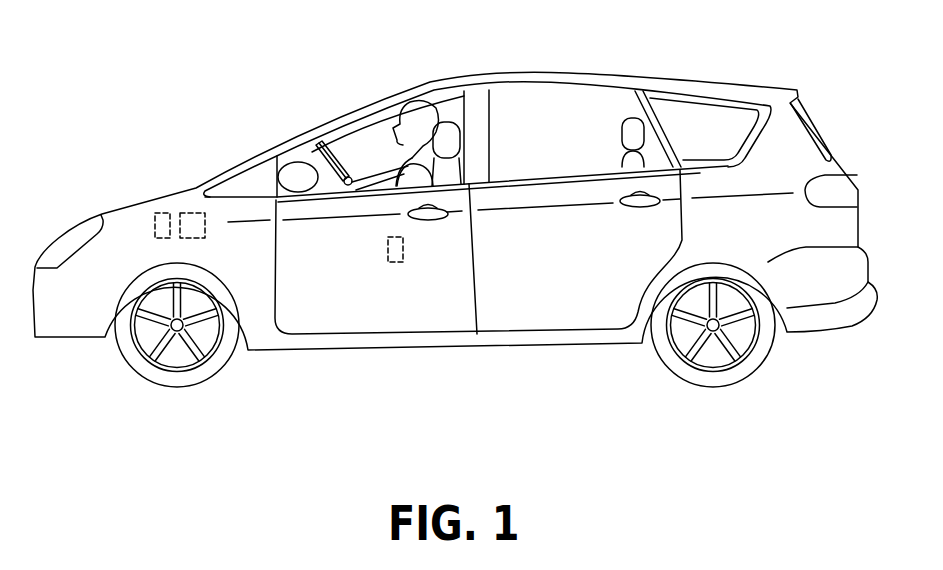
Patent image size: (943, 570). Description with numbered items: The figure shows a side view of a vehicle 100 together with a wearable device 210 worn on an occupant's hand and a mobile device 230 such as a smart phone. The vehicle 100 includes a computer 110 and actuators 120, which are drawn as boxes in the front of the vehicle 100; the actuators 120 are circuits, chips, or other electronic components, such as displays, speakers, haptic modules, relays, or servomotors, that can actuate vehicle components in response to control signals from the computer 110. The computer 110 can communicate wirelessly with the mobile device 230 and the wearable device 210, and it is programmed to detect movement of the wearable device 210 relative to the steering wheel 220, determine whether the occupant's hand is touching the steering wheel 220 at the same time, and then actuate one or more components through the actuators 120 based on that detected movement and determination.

The vehicle 100 is at (512, 70).
The computer 110 is at (190, 210).
The actuators 120 is at (158, 212).
The wearable device 210 is at (353, 193).
The steering wheel 220 is at (310, 197).
The mobile device 230 is at (396, 262).